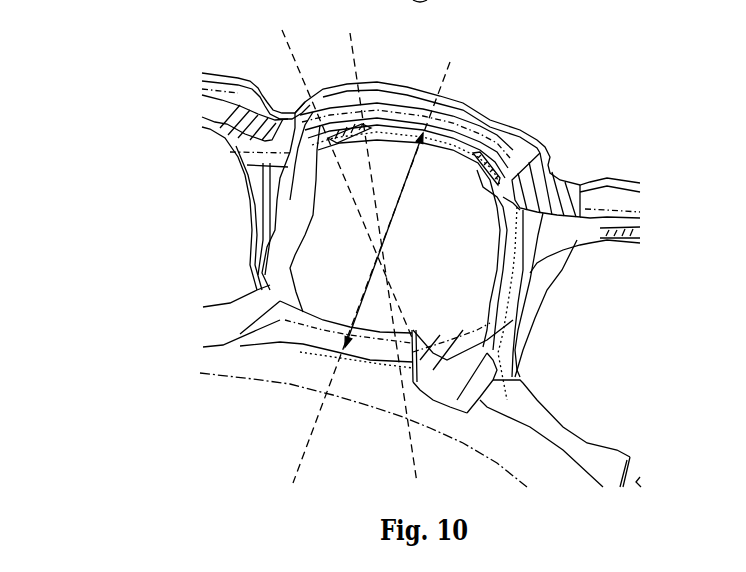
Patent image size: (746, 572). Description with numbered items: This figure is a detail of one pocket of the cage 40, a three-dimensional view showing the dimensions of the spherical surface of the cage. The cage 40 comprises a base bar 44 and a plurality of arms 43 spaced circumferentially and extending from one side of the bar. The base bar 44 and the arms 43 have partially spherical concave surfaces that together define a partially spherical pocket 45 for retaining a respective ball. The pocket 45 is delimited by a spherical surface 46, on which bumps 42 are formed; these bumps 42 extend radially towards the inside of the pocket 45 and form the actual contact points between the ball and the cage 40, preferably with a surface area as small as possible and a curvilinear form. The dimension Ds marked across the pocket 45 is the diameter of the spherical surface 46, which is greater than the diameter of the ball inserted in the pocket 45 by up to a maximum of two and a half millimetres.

The cage 40 is at (133, 211).
The bumps 42 is at (341, 122).
The arms 43 is at (537, 270).
The base bar 44 is at (236, 365).
The partially spherical pocket 45 is at (470, 260).
The spherical surface 46 is at (313, 332).